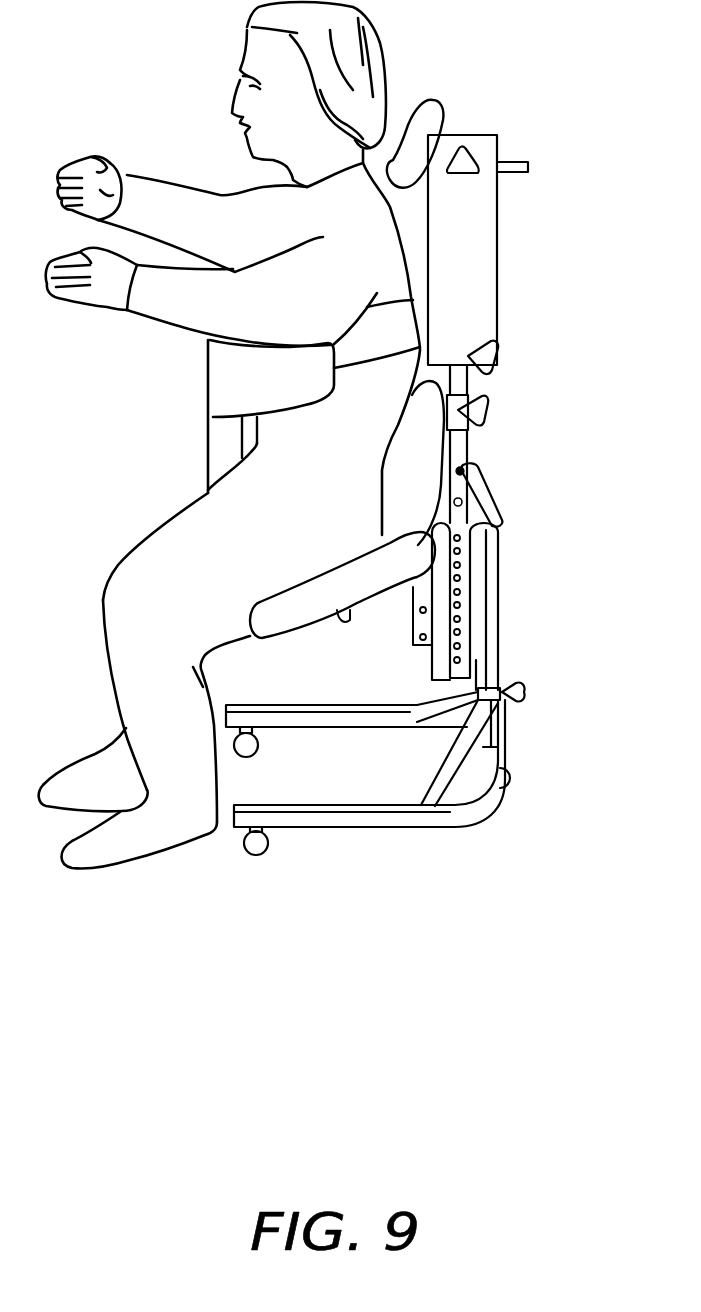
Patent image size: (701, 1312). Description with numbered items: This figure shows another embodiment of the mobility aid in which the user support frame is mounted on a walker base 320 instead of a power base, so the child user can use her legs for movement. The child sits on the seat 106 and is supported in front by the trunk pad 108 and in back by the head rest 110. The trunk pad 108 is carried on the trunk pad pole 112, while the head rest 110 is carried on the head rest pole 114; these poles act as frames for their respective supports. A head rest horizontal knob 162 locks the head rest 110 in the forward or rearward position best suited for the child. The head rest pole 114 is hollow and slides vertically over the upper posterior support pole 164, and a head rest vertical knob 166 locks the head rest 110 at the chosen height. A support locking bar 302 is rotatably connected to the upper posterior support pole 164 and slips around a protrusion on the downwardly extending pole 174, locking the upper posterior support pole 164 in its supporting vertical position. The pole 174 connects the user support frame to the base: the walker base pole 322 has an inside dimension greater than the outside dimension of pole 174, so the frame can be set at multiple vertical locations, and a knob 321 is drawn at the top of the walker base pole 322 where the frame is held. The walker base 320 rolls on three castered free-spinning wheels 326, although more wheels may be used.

The seat 106 is at (278, 620).
The trunk pad 108 is at (220, 386).
The head rest 110 is at (430, 110).
The trunk pad pole 112 is at (238, 442).
The head rest pole 114 is at (470, 280).
The head rest horizontal knob 162 is at (470, 158).
The upper posterior support pole 164 is at (460, 445).
The head rest vertical knob 166 is at (493, 358).
The downwardly extending pole 174 is at (492, 618).
The support locking bar 302 is at (487, 493).
The walker base 320 is at (422, 827).
The base locking knob 321 is at (522, 688).
The walker base pole 322 is at (505, 722).
The castered free-spinning wheels 326 is at (258, 757).